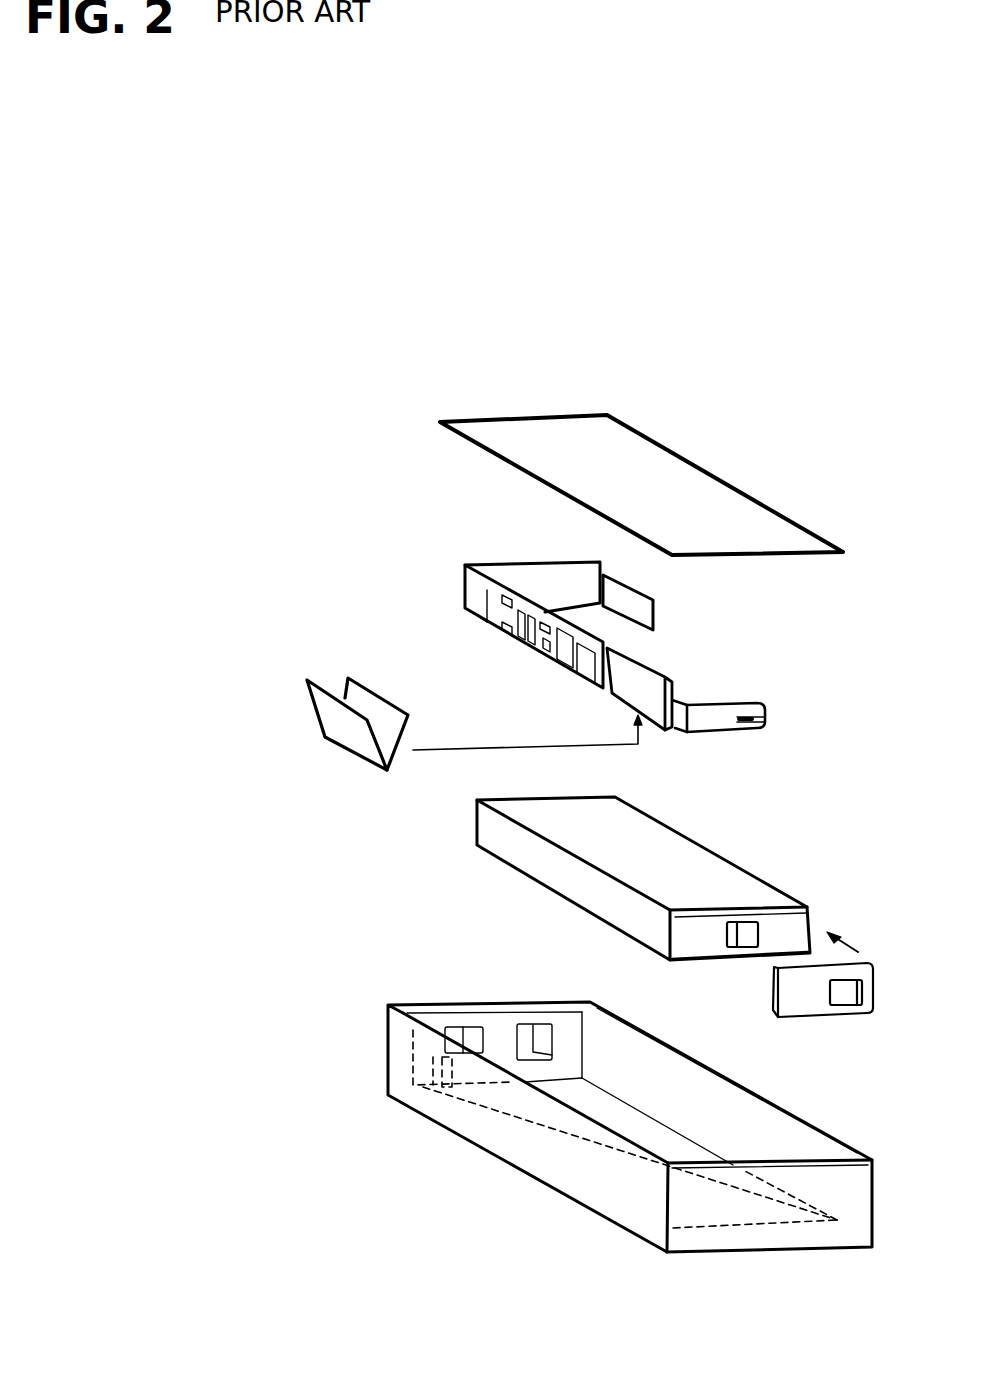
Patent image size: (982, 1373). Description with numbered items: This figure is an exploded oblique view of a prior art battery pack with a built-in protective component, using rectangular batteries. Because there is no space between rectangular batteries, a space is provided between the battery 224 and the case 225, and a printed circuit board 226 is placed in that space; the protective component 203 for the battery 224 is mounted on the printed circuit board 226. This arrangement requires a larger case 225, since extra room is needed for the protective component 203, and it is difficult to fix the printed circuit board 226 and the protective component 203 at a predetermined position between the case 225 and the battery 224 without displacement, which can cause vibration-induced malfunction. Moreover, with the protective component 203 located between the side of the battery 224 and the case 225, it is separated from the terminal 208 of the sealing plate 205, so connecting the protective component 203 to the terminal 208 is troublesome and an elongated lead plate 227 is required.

The protective component 203 is at (640, 683).
The sealing plate 205 is at (690, 943).
The terminal 208 is at (745, 945).
The battery 224 is at (705, 868).
The case 225 is at (550, 1145).
The printed circuit board 226 is at (527, 592).
The lead plate 227 is at (717, 721).